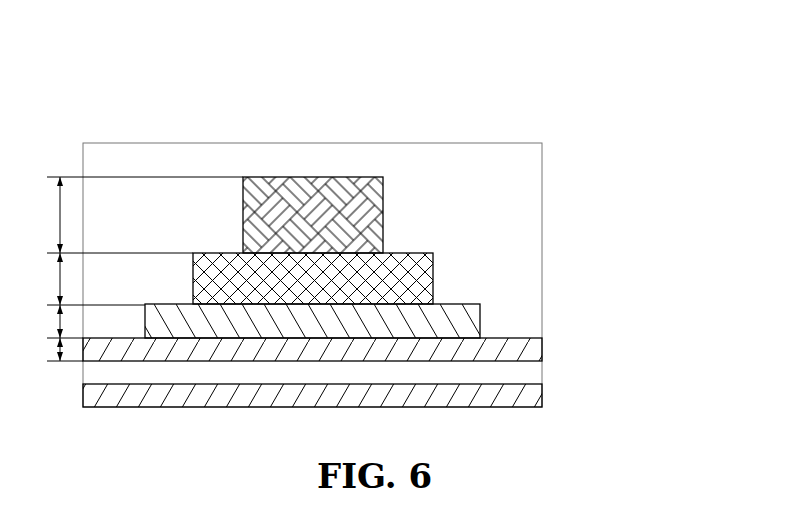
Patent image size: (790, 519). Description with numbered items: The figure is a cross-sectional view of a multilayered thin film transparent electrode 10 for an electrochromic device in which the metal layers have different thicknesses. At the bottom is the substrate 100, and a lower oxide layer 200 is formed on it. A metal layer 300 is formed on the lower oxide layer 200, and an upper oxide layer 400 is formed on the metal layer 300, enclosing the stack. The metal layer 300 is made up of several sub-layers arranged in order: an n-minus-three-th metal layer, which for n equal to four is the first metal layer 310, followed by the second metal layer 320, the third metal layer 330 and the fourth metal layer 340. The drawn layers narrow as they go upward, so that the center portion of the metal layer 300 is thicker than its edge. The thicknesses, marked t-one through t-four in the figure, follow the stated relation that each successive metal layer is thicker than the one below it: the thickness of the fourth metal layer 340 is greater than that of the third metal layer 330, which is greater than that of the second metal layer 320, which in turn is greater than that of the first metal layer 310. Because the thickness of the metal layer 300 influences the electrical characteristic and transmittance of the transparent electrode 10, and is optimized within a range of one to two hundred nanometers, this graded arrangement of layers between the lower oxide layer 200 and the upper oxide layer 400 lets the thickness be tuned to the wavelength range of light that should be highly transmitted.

The multilayered thin film transparent electrode 10 is at (488, 65).
The substrate 100 is at (542, 394).
The lower oxide layer 200 is at (542, 370).
The metal layer 300 is at (396, 263).
The first metal layer 310 is at (542, 342).
The second metal layer 320 is at (480, 320).
The third metal layer 330 is at (433, 277).
The fourth metal layer 340 is at (383, 215).
The upper oxide layer 400 is at (542, 148).